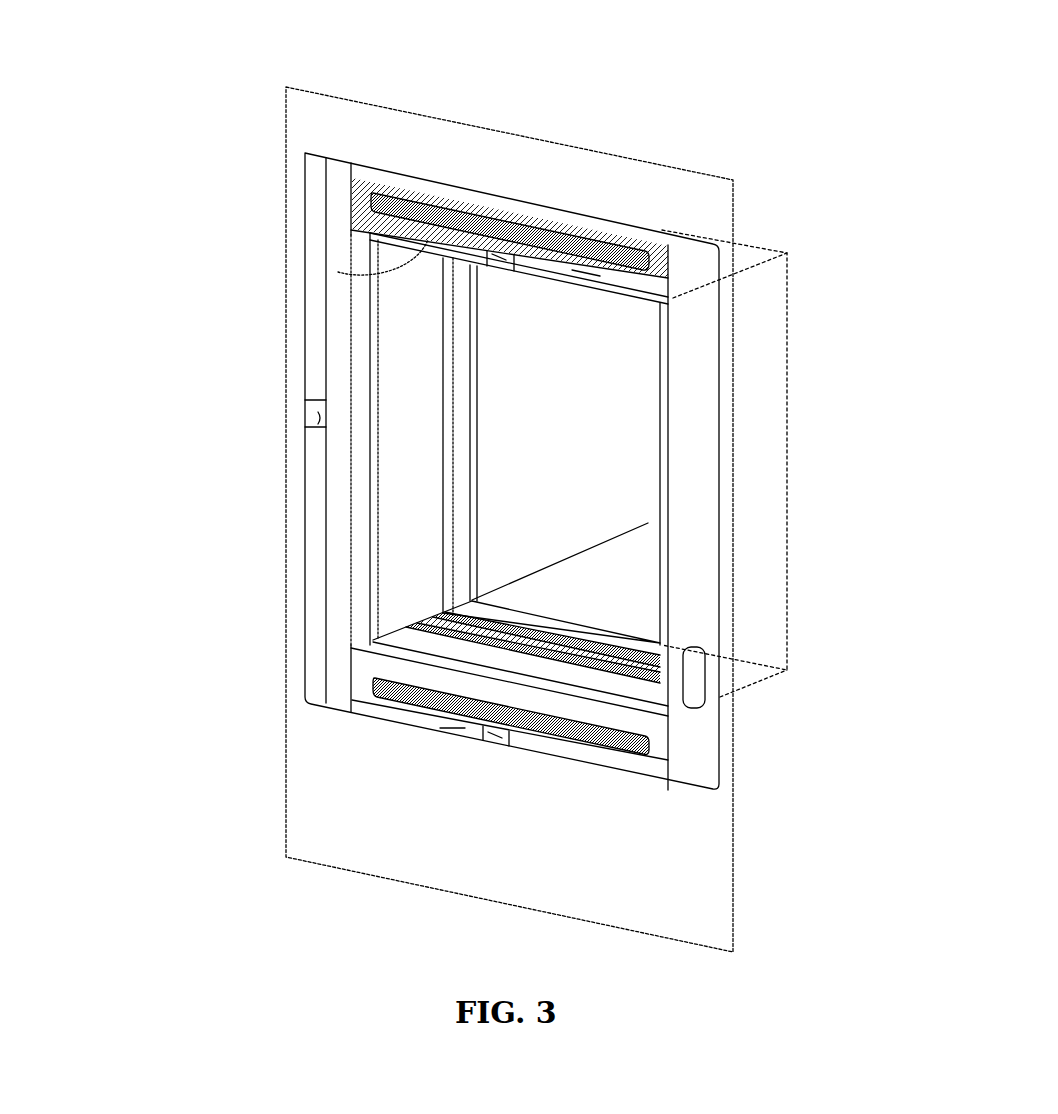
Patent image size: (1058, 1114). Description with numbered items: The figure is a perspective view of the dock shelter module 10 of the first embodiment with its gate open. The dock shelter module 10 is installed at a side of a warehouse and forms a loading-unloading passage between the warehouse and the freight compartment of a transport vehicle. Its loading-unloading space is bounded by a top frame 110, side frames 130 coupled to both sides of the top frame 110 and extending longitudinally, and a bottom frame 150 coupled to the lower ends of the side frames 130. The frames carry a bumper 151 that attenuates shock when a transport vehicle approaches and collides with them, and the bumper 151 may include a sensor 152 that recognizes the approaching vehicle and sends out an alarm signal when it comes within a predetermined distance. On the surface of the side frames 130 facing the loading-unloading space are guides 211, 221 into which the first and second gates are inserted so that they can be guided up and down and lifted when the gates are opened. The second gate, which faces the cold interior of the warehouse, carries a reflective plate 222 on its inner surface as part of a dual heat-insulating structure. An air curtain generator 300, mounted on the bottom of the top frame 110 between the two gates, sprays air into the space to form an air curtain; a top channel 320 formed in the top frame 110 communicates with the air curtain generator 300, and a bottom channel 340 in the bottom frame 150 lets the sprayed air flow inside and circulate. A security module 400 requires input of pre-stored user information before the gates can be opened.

The dock shelter module 10 is at (286, 29).
The top frame 110 is at (365, 182).
The side frame 130 is at (305, 545).
The bottom frame 150 is at (365, 678).
The bumper 151 is at (578, 270).
The sensor 152 is at (500, 250).
The guide 211 is at (385, 395).
The guide 221 is at (455, 463).
The reflective plate 222 is at (645, 350).
The air curtain generator 300 is at (345, 267).
The top channel 320 is at (350, 197).
The bottom channel 340 is at (365, 718).
The security module 400 is at (690, 676).